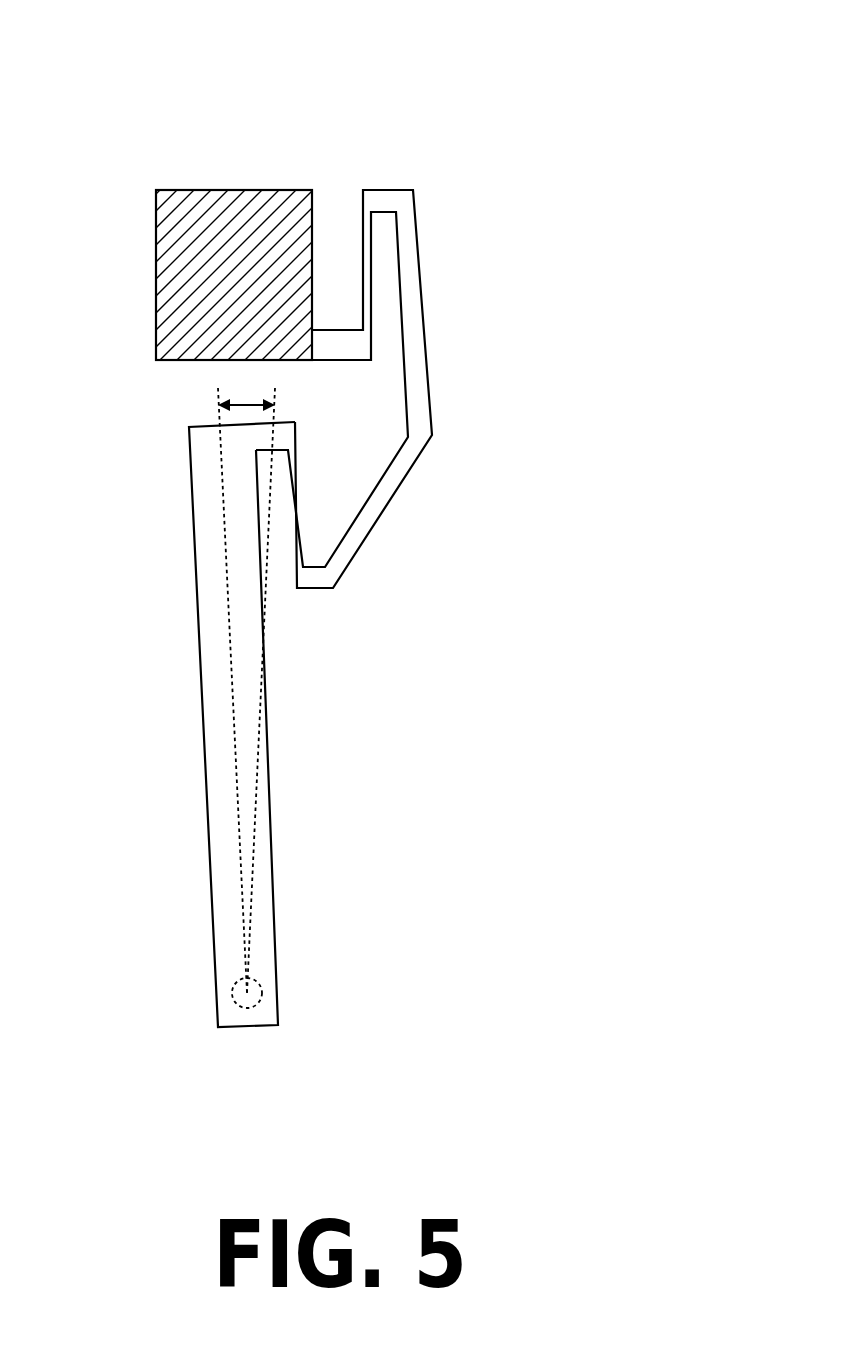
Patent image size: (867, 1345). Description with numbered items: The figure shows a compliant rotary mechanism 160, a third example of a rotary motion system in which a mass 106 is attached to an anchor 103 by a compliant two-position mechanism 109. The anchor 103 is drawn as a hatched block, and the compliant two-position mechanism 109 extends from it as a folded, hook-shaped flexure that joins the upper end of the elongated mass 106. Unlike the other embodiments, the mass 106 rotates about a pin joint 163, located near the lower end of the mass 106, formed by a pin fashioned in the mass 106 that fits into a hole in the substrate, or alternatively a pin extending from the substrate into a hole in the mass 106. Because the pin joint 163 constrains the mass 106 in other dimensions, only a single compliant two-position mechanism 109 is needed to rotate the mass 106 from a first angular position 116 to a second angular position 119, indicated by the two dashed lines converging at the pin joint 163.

The compliant rotary mechanism 160 is at (487, 133).
The anchor 103 is at (225, 190).
The compliant two-position mechanism 109 is at (505, 358).
The mass 106 is at (215, 690).
The first angular position 116 is at (225, 533).
The second angular position 119 is at (264, 606).
The pin joint 163 is at (247, 995).